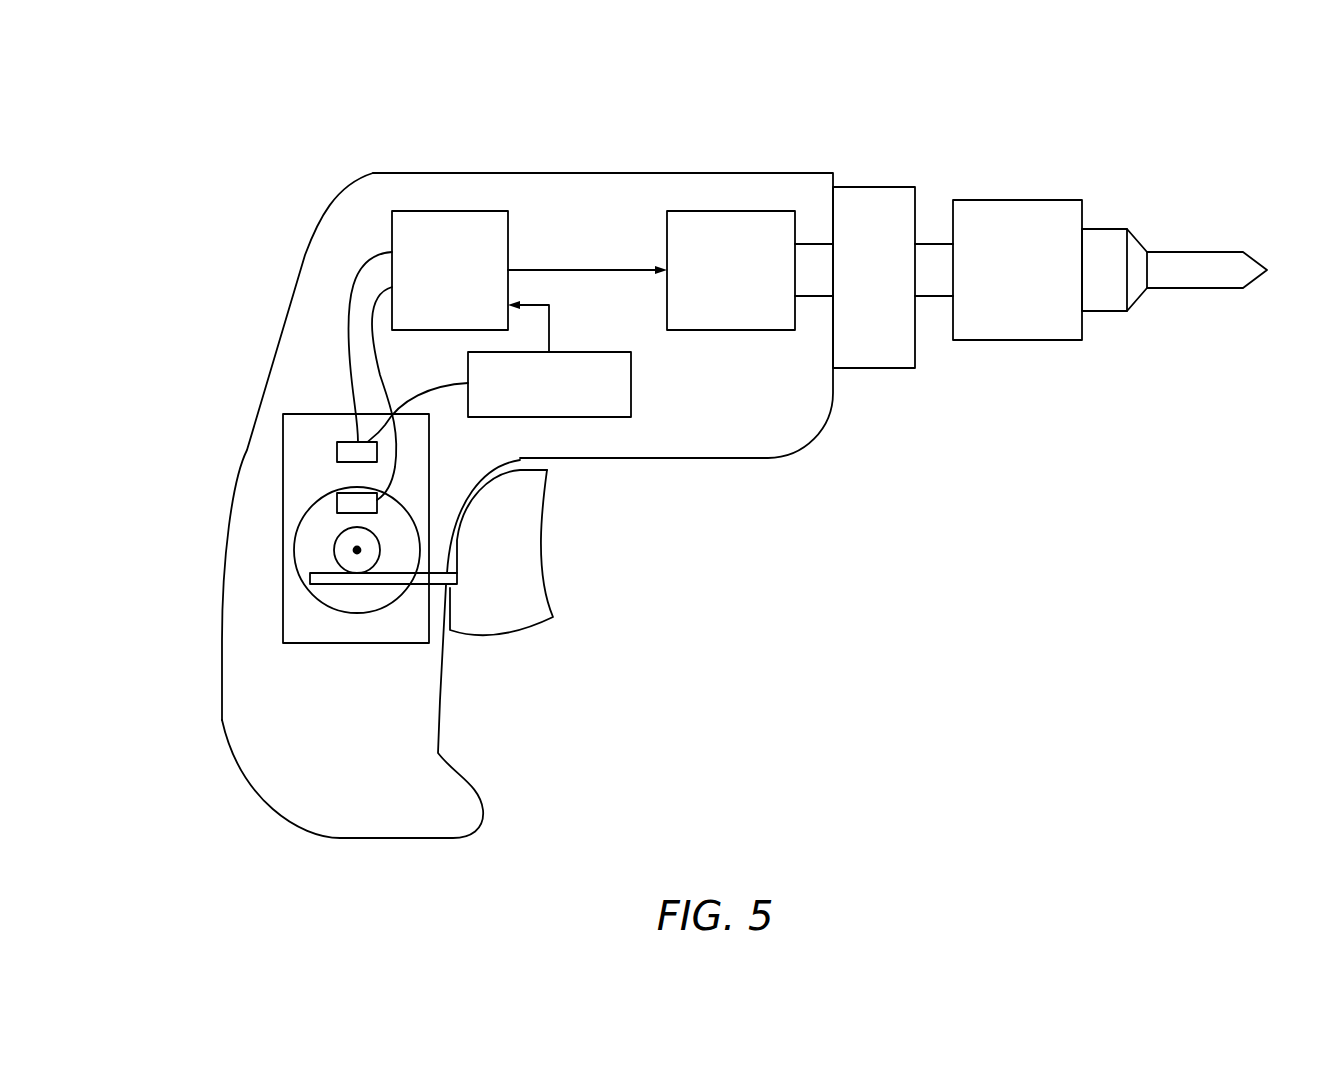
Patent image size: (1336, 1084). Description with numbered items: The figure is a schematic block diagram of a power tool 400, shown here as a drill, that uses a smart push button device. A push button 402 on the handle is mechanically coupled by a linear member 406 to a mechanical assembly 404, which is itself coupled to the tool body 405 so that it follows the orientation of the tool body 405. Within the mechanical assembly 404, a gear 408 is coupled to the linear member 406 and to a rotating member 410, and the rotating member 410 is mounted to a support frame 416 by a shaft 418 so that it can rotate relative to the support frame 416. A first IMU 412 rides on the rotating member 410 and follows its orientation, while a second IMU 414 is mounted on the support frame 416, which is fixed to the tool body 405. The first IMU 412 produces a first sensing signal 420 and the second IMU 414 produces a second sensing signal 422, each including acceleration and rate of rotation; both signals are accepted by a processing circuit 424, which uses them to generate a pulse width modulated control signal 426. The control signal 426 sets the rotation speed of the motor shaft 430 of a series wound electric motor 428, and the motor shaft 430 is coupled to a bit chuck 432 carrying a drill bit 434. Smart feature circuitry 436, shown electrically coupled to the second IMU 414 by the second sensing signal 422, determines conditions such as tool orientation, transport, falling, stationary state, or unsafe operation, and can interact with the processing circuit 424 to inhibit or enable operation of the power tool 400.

The power tool 400 is at (291, 110).
The push button 402 is at (513, 620).
The mechanical assembly 404 is at (288, 390).
The tool body 405 is at (812, 440).
The linear member 406 is at (317, 583).
The gear 408 is at (342, 555).
The rotating member 410 is at (315, 523).
The first IMU 412 is at (345, 494).
The second IMU 414 is at (353, 453).
The support frame 416 is at (297, 428).
The shaft 418 is at (357, 550).
The first sensing signal 420 is at (372, 315).
The second sensing signal 422 is at (367, 275).
The processing circuit 424 is at (462, 232).
The control signal 426 is at (571, 270).
The motor 428 is at (710, 230).
The motor shaft 430 is at (808, 255).
The bit chuck 432 is at (1010, 233).
The drill bit 434 is at (1198, 273).
The smart feature circuitry 436 is at (600, 417).